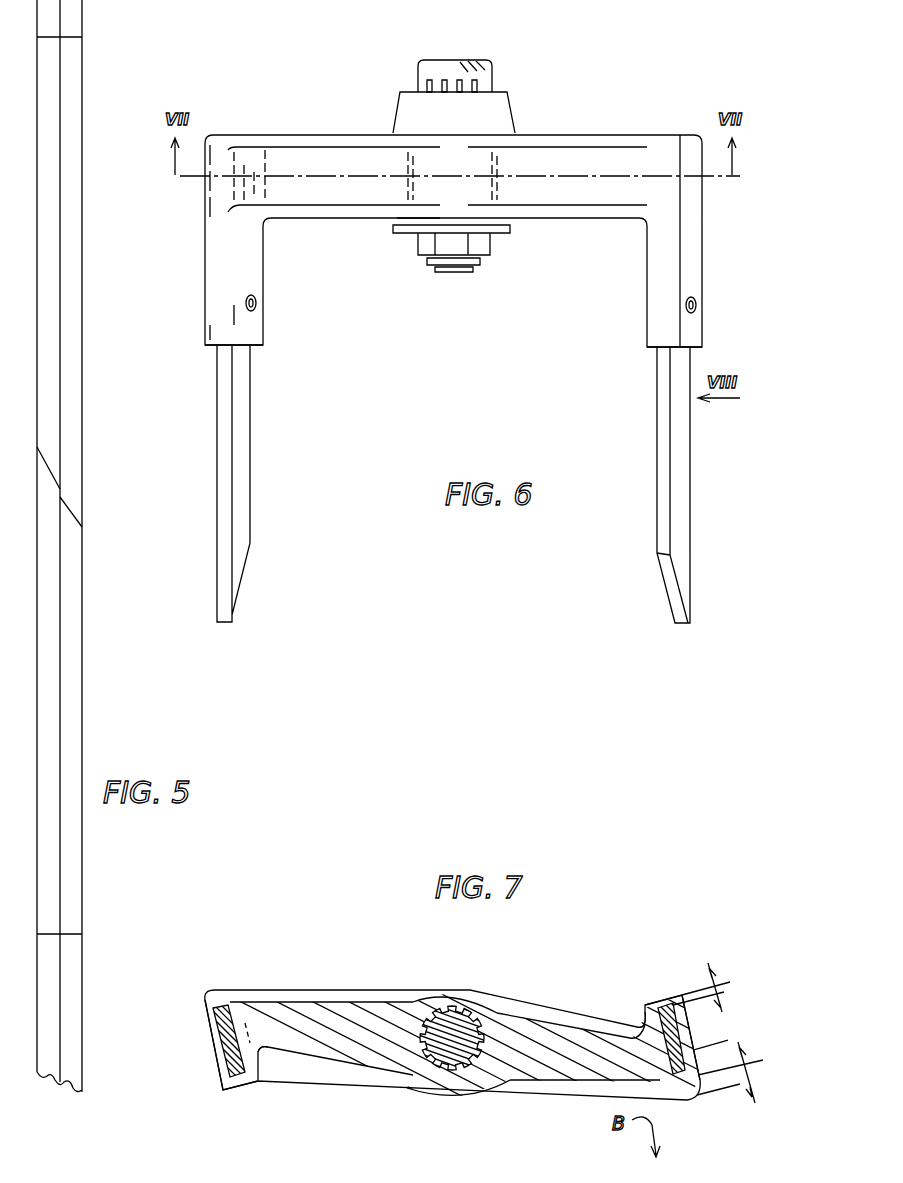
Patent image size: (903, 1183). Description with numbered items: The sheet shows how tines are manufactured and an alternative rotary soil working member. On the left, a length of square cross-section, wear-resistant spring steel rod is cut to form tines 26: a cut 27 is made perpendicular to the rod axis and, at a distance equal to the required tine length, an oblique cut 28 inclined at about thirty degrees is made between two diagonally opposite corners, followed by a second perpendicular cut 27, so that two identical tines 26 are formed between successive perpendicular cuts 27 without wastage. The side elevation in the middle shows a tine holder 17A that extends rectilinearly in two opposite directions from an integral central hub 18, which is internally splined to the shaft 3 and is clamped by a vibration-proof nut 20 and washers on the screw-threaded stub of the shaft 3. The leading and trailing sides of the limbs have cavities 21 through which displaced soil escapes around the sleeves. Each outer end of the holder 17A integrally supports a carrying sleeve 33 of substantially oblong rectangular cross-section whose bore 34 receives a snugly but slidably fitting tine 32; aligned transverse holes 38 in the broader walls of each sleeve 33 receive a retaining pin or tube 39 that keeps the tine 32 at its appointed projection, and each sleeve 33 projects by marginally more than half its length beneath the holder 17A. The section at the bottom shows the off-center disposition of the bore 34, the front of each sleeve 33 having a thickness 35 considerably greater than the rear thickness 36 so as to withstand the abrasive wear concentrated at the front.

In FIG. 6, the shaft 3 is at (432, 70).
In FIG. 7, the shaft 3 is at (430, 1058).
In FIG. 6, the tine holder 17A is at (453, 219).
In FIG. 7, the tine holder 17A is at (596, 995).
In FIG. 6, the hub 18 is at (500, 110).
In FIG. 7, the hub 18 is at (462, 992).
In FIG. 6, the vibration-proof nut 20 is at (423, 245).
In FIG. 6, the cavities 21 is at (342, 176).
In FIG. 7, the cavities 21 is at (307, 998).
In FIG. 5, the tine 26 is at (52, 378).
In FIG. 5, the perpendicular cut 27 is at (73, 50).
In FIG. 5, the oblique cut 28 is at (62, 500).
In FIG. 6, the tine 32 is at (240, 468).
In FIG. 7, the tine 32 is at (218, 1033).
In FIG. 6, the carrying sleeve 33 is at (215, 305).
In FIG. 7, the carrying sleeve 33 is at (200, 1007).
In FIG. 7, the bore 34 is at (217, 1053).
In FIG. 7, the front thickness 35 is at (734, 1070).
In FIG. 7, the rear thickness 36 is at (722, 990).
In FIG. 6, the transverse holes 38 is at (254, 295).
In FIG. 6, the retaining pin or tube 39 is at (257, 300).